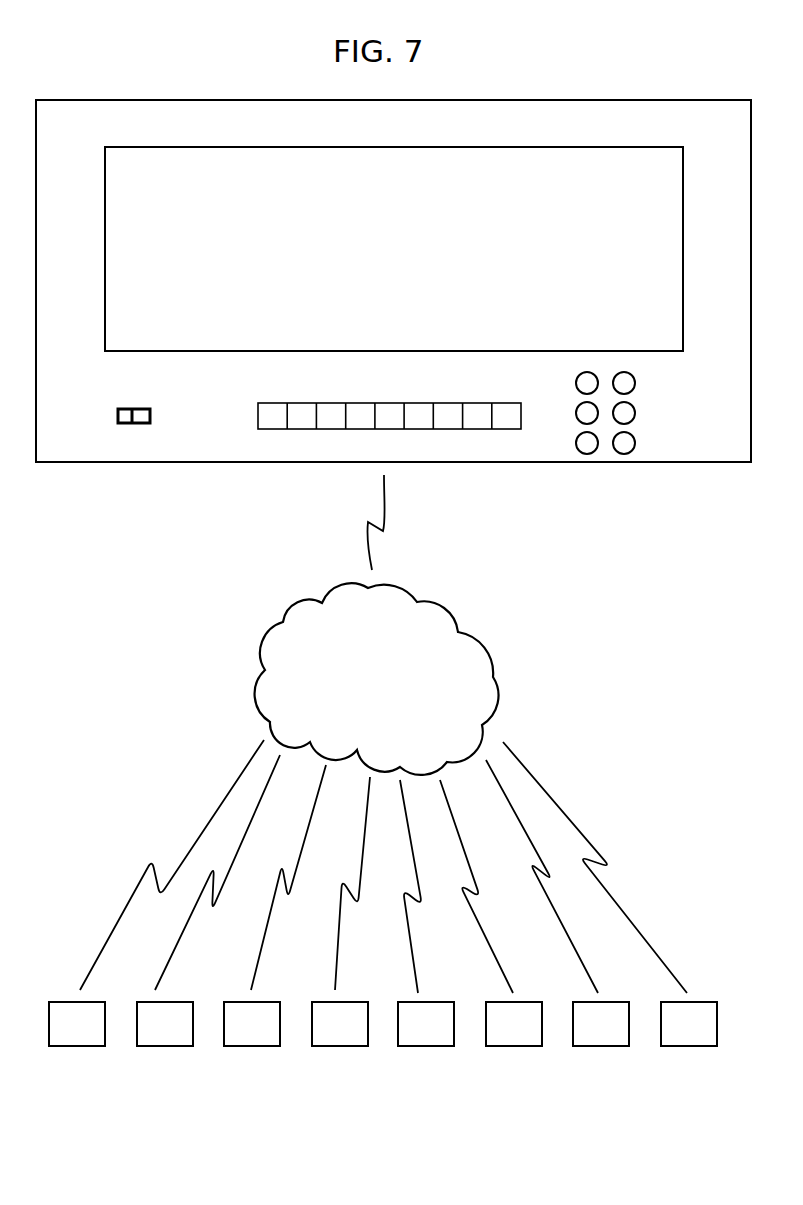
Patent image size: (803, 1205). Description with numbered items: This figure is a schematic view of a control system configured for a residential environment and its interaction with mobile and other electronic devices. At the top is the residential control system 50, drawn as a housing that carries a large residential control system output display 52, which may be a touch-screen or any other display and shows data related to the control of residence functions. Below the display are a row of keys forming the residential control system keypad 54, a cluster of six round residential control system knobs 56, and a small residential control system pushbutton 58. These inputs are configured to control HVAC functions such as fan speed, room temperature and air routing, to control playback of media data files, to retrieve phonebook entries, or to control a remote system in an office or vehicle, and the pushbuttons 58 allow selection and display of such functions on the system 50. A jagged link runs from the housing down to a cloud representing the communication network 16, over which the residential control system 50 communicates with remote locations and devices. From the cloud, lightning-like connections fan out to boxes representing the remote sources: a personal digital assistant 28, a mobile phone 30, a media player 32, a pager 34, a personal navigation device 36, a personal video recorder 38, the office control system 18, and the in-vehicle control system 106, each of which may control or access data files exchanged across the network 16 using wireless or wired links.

The residential control system 50 is at (212, 99).
The residential control system output display 52 is at (551, 146).
The residential control system keypad 54 is at (478, 425).
The residential control system knobs 56 is at (634, 446).
The residential control system pushbuttons 58 is at (125, 424).
The communication network 16 is at (502, 650).
The personal digital assistant 28 is at (91, 1033).
The mobile phone 30 is at (179, 1033).
The media player 32 is at (266, 1033).
The pager 34 is at (354, 1033).
The personal navigation device 36 is at (440, 1033).
The personal video recorder 38 is at (528, 1033).
The office control system 18 is at (615, 1033).
The in-vehicle control system 106 is at (709, 1033).